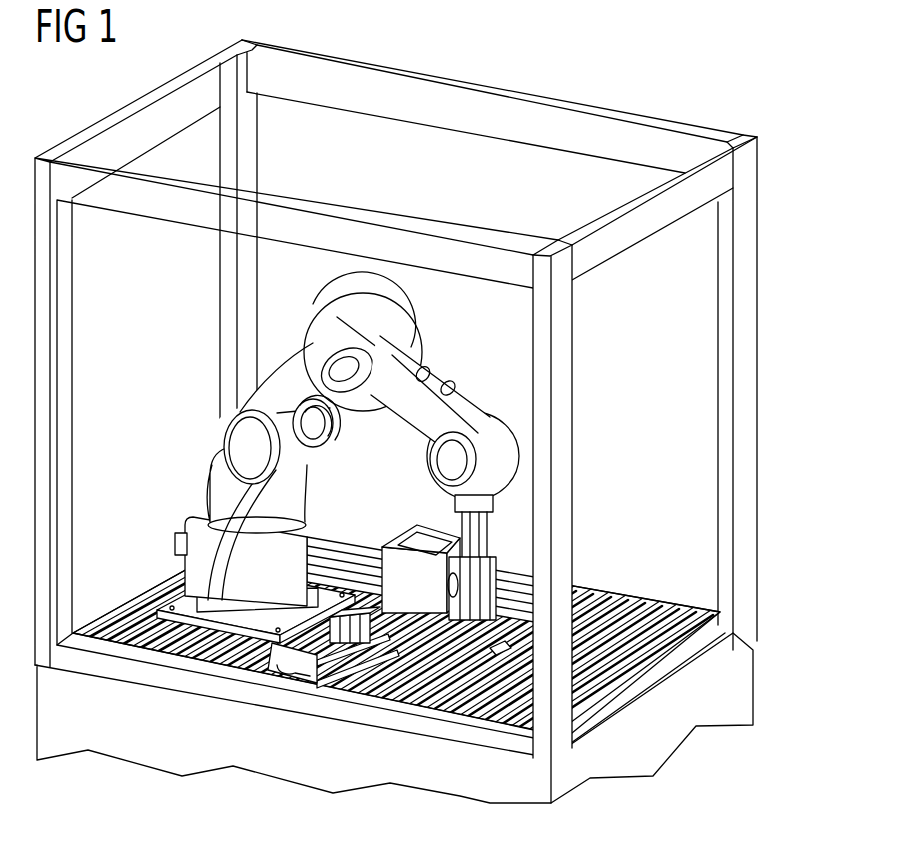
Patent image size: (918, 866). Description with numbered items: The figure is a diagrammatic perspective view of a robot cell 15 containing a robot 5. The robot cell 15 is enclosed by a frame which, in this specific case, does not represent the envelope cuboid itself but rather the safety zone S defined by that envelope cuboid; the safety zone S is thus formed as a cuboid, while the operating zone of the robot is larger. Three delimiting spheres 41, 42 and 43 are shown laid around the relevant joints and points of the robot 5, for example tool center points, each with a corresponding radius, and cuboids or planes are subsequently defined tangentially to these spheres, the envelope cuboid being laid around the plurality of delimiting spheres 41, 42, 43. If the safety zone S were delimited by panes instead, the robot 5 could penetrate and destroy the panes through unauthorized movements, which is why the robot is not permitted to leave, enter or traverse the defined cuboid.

The safety zone S is at (770, 124).
The robot cell 15 is at (558, 363).
The robot 5 is at (340, 558).
The delimiting sphere 41 is at (421, 321).
The delimiting sphere 42 is at (490, 414).
The delimiting sphere 43 is at (497, 567).